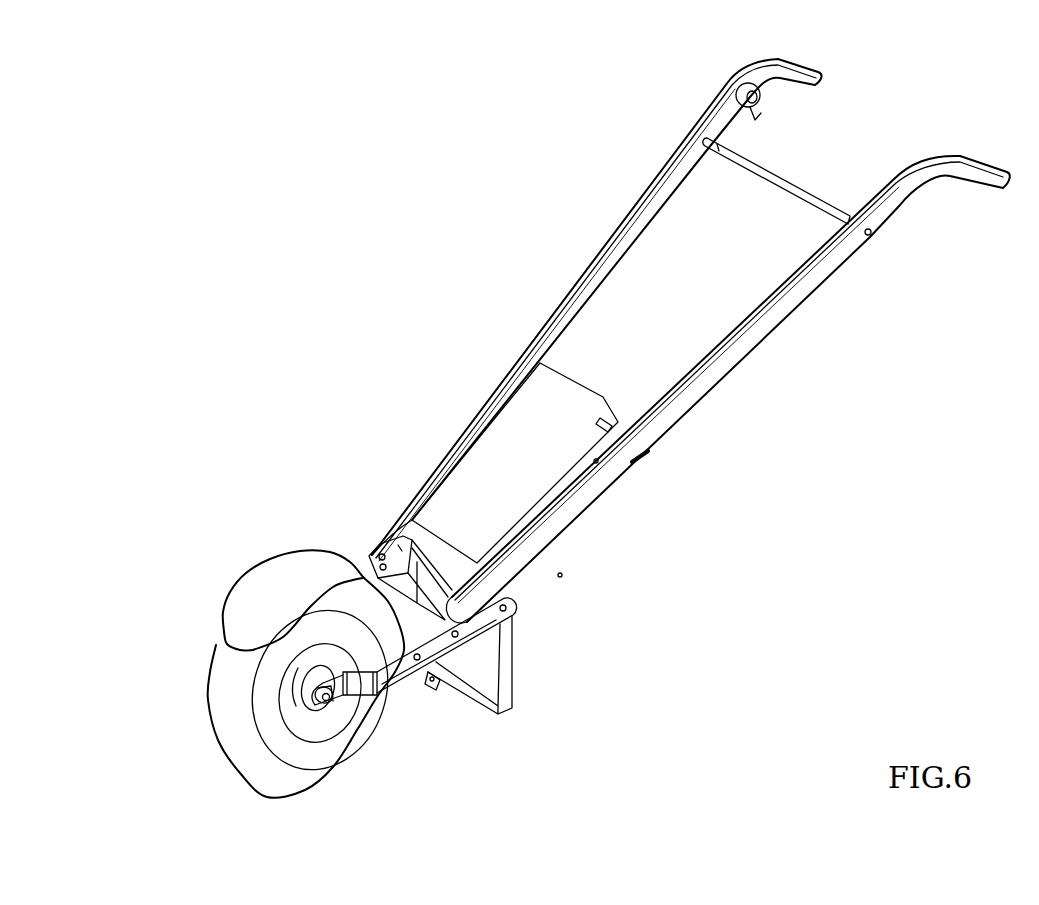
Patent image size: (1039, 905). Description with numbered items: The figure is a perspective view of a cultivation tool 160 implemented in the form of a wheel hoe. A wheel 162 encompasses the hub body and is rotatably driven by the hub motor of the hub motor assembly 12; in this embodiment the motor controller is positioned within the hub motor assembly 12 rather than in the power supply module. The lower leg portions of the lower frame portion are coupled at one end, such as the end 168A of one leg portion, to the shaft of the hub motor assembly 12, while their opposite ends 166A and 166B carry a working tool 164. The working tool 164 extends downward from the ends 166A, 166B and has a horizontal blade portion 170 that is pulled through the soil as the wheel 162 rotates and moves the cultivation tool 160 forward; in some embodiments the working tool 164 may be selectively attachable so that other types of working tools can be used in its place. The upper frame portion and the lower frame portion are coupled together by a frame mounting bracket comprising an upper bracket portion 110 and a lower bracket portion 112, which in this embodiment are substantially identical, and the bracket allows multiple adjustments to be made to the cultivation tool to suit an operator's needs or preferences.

The cultivation tool 160 is at (333, 320).
The wheel 162 is at (210, 748).
The working tool 164 is at (555, 664).
The end of lower leg portion 166A is at (517, 601).
The end of lower leg portion 166B is at (403, 537).
The end of lower leg portion 168A is at (340, 695).
The horizontal blade portion 170 is at (477, 706).
The upper bracket portion 110 is at (372, 550).
The lower bracket portion 112 is at (433, 690).
The hub motor assembly 12 is at (307, 710).